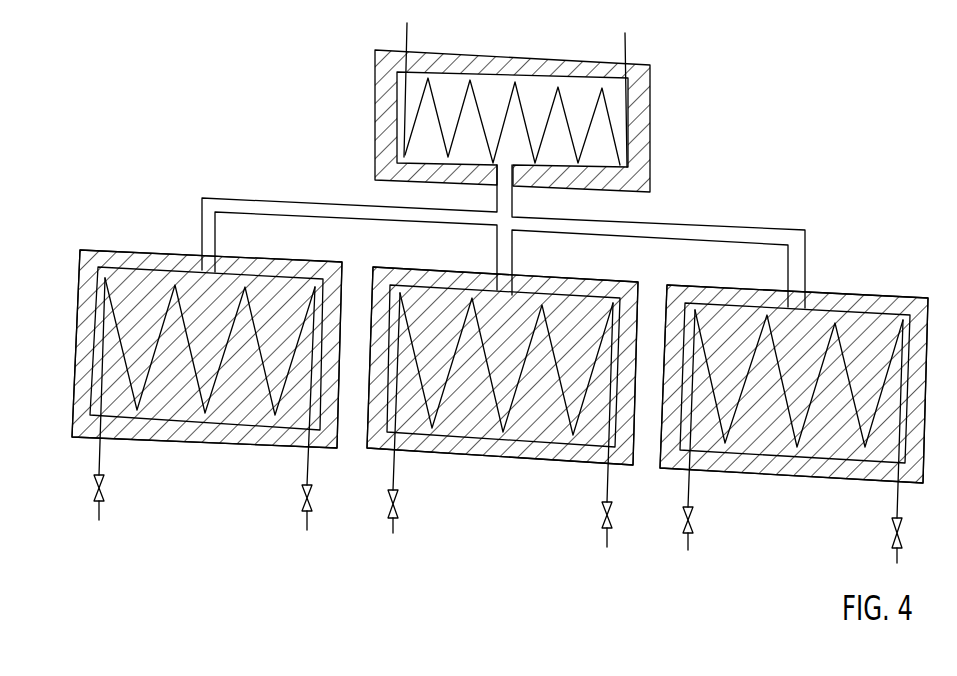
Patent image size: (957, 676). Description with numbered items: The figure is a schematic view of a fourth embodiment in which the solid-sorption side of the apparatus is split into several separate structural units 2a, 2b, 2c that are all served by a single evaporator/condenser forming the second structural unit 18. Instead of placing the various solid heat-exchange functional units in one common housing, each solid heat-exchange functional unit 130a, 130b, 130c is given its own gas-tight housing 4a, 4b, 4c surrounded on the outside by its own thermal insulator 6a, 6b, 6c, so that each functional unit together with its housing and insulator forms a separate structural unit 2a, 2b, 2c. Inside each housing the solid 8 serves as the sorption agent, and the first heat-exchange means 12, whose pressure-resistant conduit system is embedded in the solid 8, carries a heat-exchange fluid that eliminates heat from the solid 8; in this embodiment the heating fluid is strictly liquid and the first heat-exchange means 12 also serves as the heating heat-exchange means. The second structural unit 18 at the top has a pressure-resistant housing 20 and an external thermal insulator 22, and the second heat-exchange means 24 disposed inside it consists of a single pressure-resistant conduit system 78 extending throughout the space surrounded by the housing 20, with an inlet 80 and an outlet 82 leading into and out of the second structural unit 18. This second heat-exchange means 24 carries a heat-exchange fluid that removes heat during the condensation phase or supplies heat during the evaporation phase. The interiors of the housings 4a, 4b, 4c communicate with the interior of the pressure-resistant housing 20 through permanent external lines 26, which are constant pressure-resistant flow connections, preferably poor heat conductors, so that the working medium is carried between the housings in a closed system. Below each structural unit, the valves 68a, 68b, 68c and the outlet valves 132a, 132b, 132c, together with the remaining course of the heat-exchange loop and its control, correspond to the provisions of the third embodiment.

The second structural unit 18 is at (658, 80).
The external thermal insulator 22 is at (637, 107).
The pressure-resistant housing 20 is at (628, 133).
The outlet 82 is at (406, 70).
The inlet 80 is at (626, 70).
The second heat-exchange means 24 is at (549, 100).
The pressure-resistant conduit system 78 is at (473, 92).
The external flow connection 26 is at (345, 205).
The structural unit 2a is at (70, 259).
The housing 4a is at (120, 268).
The thermal insulator 6a is at (158, 262).
The structural unit 2b is at (362, 278).
The housing 4b is at (410, 285).
The thermal insulator 6b is at (450, 278).
The structural unit 2c is at (657, 297).
The housing 4c is at (715, 290).
The thermal insulator 6c is at (743, 297).
The solid 8 is at (230, 287).
The first heat-exchange means 12 is at (151, 390).
The valve 68a is at (93, 487).
The valve 68b is at (388, 502).
The valve 68c is at (683, 520).
The solid heat-exchange functional unit 130a is at (226, 418).
The solid heat-exchange functional unit 130b is at (524, 422).
The solid heat-exchange functional unit 130c is at (812, 428).
The outlet valve 132a is at (305, 500).
The outlet valve 132b is at (602, 515).
The outlet valve 132c is at (893, 532).